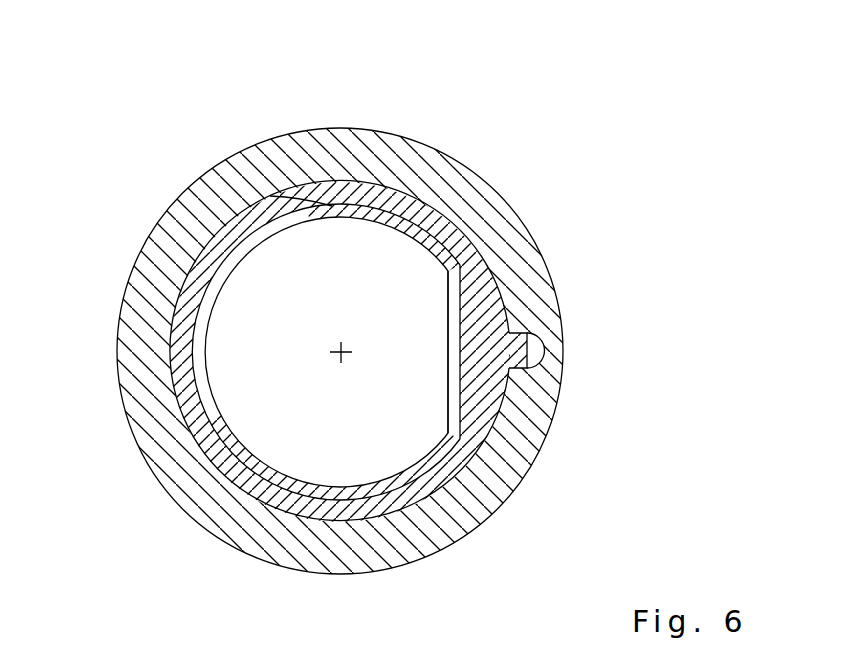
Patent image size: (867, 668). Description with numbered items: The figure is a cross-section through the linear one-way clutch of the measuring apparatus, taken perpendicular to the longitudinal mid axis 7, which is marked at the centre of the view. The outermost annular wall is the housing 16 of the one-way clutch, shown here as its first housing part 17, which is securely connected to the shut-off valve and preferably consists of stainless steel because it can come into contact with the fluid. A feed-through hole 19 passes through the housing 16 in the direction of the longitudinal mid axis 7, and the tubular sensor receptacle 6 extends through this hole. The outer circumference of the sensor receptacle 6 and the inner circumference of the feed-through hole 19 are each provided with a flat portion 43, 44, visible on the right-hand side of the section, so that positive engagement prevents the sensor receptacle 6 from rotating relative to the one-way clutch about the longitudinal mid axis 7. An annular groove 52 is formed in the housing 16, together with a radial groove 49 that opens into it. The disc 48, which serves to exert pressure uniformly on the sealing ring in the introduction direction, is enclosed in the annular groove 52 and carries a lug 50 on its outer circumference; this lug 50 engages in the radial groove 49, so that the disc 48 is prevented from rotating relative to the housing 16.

The housing 16 is at (357, 124).
The first housing part 17 is at (262, 148).
The disc 48 is at (400, 193).
The sensor receptacle 6 is at (223, 273).
The feed-through hole 19 is at (193, 353).
The annular groove 52 is at (187, 432).
The longitudinal mid axis 7 is at (340, 347).
The flat portion 43 is at (449, 303).
The flat portion 44 is at (460, 350).
The lug 50 is at (523, 333).
The radial groove 49 is at (540, 352).